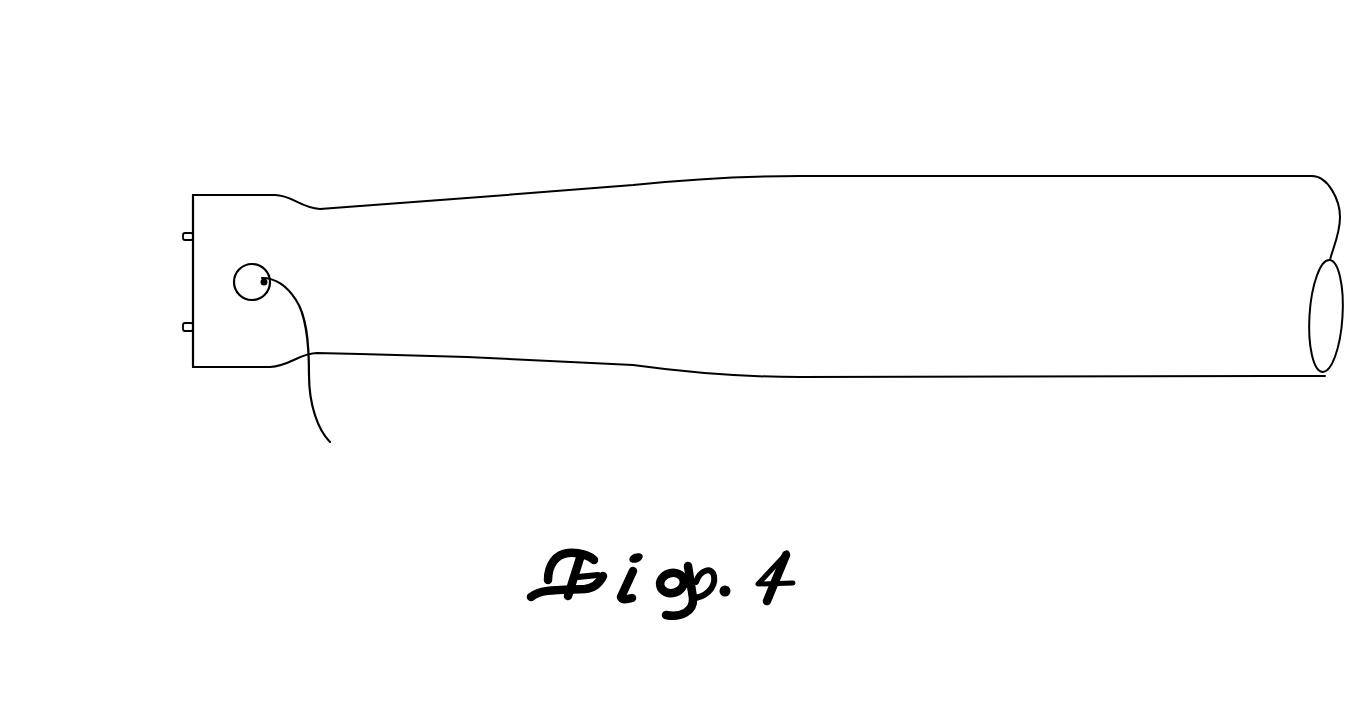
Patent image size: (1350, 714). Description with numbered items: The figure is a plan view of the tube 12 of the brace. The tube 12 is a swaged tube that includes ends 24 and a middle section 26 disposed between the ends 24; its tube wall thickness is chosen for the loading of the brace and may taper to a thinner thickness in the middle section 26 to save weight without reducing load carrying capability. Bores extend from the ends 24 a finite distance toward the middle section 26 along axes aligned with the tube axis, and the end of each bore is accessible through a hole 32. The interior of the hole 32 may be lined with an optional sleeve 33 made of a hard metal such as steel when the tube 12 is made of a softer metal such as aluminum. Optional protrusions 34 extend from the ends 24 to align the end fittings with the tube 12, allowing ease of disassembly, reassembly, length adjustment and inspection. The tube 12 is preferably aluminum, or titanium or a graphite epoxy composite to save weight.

The tube 12 is at (769, 193).
The ends 24 is at (255, 175).
The middle section 26 is at (1254, 165).
The hole 32 is at (236, 306).
The sleeve 33 is at (316, 387).
The protrusions 34 is at (183, 237).